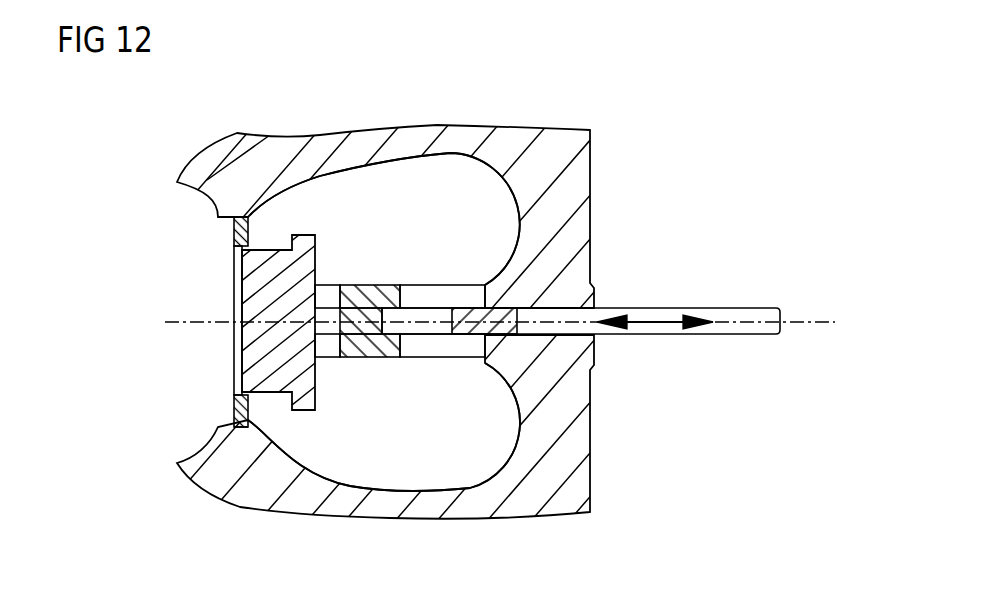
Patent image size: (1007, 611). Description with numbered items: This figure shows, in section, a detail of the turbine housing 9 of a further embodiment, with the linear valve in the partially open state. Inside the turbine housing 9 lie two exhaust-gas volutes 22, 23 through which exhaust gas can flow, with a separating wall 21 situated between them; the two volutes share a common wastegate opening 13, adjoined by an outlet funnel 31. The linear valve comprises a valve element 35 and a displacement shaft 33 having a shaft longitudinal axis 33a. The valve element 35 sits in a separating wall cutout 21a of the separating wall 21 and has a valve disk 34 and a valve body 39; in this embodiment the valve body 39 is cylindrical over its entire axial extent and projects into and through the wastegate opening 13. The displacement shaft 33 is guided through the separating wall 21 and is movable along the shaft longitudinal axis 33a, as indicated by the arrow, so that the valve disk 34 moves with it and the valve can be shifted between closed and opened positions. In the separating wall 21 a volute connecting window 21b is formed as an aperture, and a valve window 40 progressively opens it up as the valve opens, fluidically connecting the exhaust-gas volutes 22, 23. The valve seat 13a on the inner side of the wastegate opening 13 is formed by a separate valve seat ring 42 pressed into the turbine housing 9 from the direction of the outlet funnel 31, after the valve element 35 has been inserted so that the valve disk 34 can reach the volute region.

The turbine housing 9 is at (577, 168).
The wastegate opening 13 is at (238, 362).
The valve seat 13a is at (252, 412).
The separating wall 21 is at (385, 303).
The separating wall cutout 21a is at (328, 300).
The volute connecting window 21b is at (457, 297).
The exhaust-gas volute 22 is at (500, 235).
The exhaust-gas volute 23 is at (500, 441).
The outlet funnel 31 is at (208, 246).
The displacement shaft 33 is at (652, 330).
The shaft longitudinal axis 33a is at (812, 322).
The valve disk 34 is at (303, 233).
The valve element 35 is at (336, 404).
The valve body 39 is at (243, 290).
The valve window 40 is at (420, 327).
The valve seat ring 42 is at (236, 418).